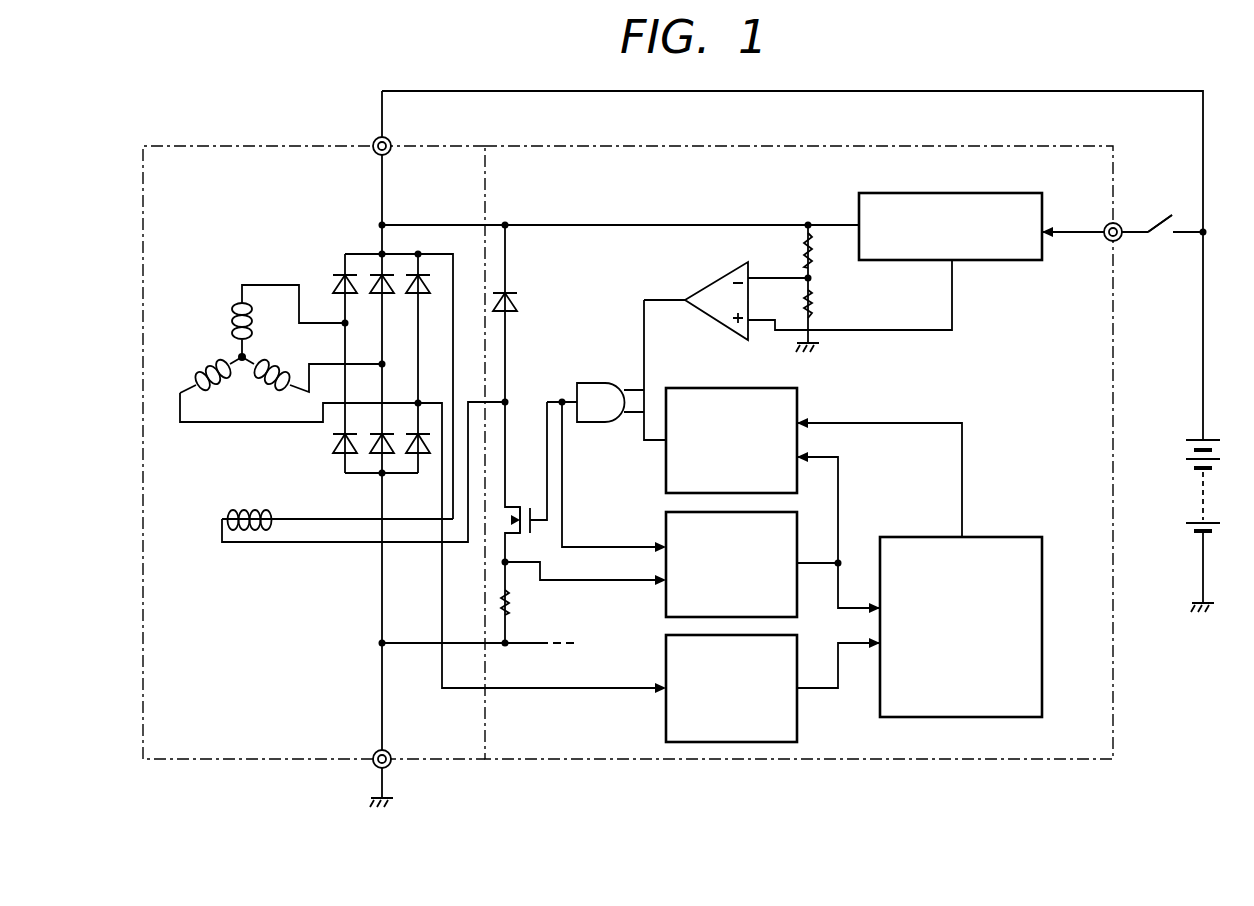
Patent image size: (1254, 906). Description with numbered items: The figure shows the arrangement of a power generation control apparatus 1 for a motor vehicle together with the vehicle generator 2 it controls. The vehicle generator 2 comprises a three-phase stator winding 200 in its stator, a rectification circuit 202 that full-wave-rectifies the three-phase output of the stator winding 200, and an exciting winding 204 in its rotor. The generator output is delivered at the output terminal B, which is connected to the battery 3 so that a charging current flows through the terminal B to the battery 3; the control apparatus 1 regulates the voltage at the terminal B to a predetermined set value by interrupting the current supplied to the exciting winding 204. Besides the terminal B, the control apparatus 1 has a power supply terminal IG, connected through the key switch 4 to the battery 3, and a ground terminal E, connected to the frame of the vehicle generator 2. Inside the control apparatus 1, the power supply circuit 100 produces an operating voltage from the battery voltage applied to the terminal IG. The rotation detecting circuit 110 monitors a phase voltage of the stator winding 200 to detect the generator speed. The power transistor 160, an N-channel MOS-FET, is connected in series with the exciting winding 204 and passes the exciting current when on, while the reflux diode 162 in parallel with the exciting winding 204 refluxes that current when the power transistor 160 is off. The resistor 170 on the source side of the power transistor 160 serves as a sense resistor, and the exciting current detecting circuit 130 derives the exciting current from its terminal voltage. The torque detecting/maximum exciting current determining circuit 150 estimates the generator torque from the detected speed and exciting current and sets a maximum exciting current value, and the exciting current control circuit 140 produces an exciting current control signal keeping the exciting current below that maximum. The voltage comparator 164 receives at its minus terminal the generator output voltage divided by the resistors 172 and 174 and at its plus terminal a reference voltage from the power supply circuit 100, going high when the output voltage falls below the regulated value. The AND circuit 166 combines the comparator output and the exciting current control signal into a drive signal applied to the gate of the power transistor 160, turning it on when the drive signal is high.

The vehicle power generation control apparatus 1 is at (1060, 146).
The vehicle generator 2 is at (297, 146).
The battery 3 is at (1207, 440).
The key switch 4 is at (1160, 241).
The power supply circuit 100 is at (985, 192).
The rotation detecting circuit 110 is at (664, 662).
The exciting current detecting circuit 130 is at (664, 528).
The exciting current control circuit 140 is at (662, 466).
The torque detecting/maximum exciting current determining circuit 150 is at (1008, 537).
The power transistor 160 is at (515, 507).
The reflux diode 162 is at (518, 299).
The voltage comparator 164 is at (712, 281).
The AND circuit 166 is at (594, 383).
The resistor 170 is at (512, 602).
The resistor 172 is at (812, 258).
The resistor 174 is at (814, 306).
The three-phase stator winding 200 is at (230, 350).
The rectification circuit 202 is at (362, 254).
The exciting winding 204 is at (238, 510).
The output terminal B is at (373, 136).
The ground terminal E is at (390, 772).
The power supply terminal IG is at (1124, 220).